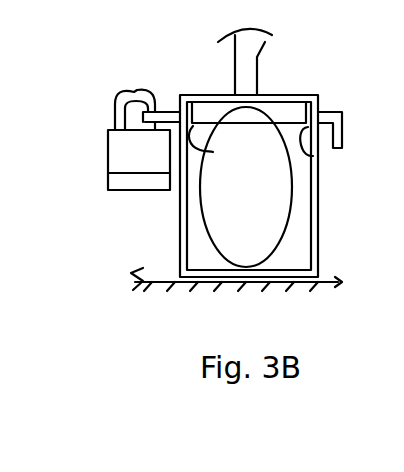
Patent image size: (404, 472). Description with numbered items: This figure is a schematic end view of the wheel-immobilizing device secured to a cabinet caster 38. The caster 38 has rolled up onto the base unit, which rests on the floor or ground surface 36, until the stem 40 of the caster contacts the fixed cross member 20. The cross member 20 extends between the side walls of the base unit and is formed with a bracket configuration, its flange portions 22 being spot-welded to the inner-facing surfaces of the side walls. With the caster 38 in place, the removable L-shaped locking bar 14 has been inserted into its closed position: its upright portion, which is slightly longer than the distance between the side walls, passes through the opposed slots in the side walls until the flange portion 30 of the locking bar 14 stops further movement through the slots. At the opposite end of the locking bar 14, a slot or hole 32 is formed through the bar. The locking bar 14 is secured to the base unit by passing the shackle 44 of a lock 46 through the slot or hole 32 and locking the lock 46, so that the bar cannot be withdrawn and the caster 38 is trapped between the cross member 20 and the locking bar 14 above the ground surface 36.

The locking bar 14 is at (327, 112).
The fixed cross member 20 is at (288, 98).
The flange portions 22 is at (334, 166).
The flange portion 30 is at (330, 138).
The slot or hole 32 is at (163, 108).
The floor or ground surface 36 is at (156, 275).
The caster 38 is at (273, 227).
The stem 40 is at (247, 68).
The shackle 44 is at (140, 90).
The lock 46 is at (112, 158).